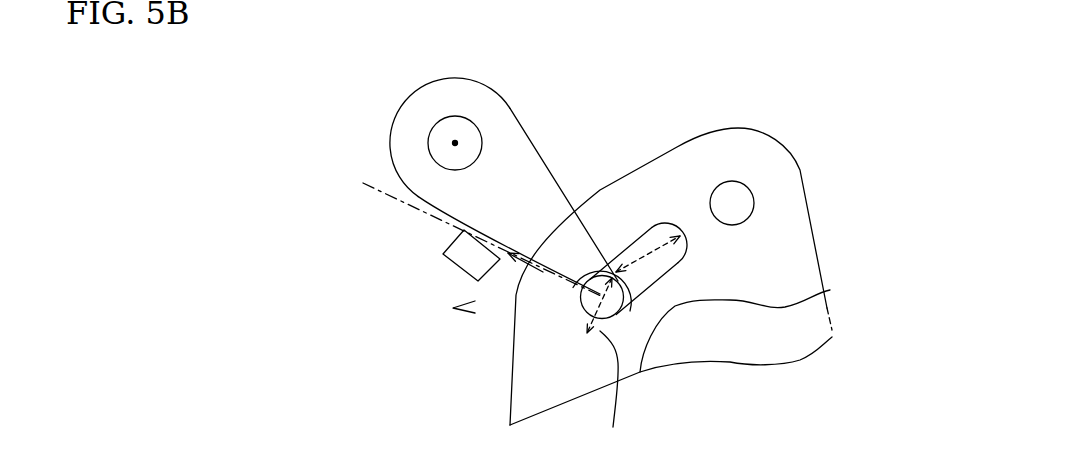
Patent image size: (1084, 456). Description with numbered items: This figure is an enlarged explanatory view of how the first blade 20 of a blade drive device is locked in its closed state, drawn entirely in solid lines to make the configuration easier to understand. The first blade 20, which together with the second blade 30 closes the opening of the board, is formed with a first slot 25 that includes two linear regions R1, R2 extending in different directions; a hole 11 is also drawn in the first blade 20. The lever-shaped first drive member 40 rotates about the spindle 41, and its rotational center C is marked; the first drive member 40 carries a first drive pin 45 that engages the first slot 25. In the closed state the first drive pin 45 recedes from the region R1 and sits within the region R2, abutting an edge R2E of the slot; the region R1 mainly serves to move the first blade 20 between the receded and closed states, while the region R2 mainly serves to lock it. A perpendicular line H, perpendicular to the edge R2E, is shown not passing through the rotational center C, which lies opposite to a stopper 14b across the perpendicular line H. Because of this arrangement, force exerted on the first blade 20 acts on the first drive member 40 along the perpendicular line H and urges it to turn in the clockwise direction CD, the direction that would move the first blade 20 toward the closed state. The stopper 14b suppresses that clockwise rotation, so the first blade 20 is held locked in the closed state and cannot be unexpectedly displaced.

The first blade 20 is at (800, 161).
The hole 11 is at (740, 193).
The second blade 30 is at (758, 303).
The first drive member 40 is at (407, 150).
The spindle 41 is at (431, 136).
The rotational center C is at (455, 143).
The first slot 25 is at (663, 222).
The first drive pin 45 is at (578, 297).
The perpendicular line H is at (368, 190).
The stopper 14b is at (443, 254).
The clockwise direction CD is at (520, 262).
The region R1 is at (616, 272).
The region R2 is at (600, 333).
The edge R2E is at (605, 226).